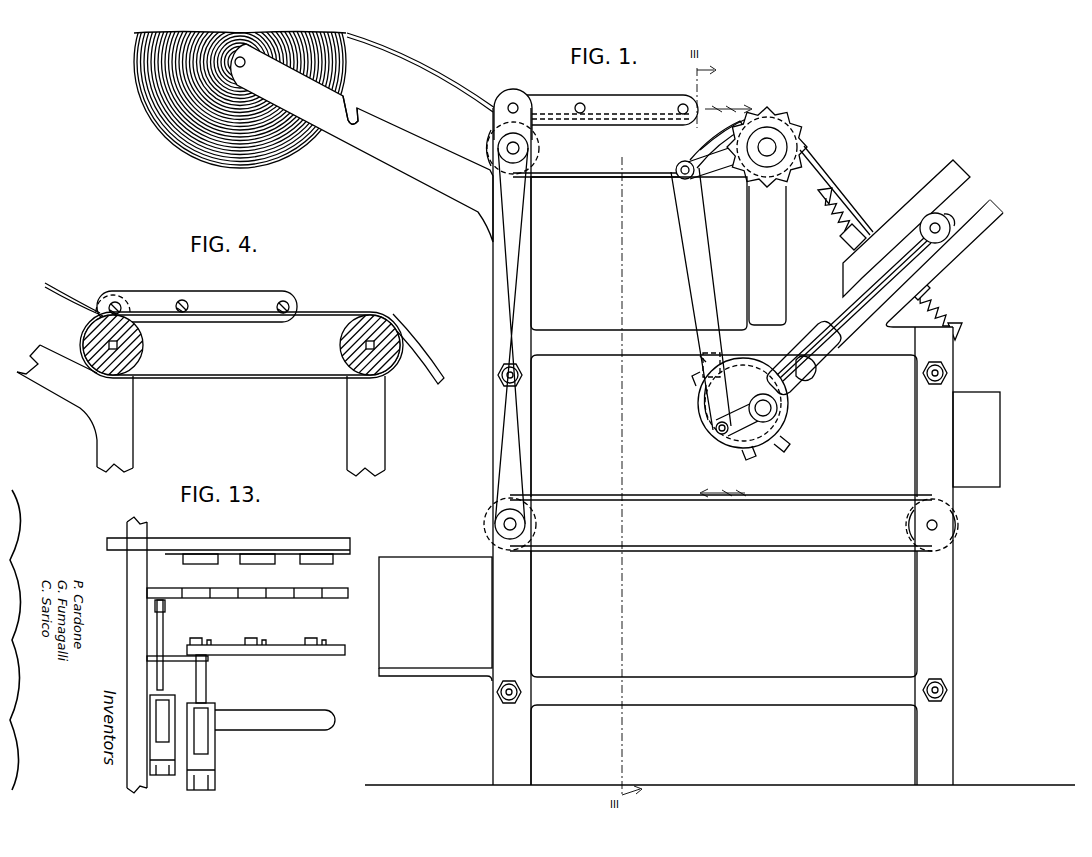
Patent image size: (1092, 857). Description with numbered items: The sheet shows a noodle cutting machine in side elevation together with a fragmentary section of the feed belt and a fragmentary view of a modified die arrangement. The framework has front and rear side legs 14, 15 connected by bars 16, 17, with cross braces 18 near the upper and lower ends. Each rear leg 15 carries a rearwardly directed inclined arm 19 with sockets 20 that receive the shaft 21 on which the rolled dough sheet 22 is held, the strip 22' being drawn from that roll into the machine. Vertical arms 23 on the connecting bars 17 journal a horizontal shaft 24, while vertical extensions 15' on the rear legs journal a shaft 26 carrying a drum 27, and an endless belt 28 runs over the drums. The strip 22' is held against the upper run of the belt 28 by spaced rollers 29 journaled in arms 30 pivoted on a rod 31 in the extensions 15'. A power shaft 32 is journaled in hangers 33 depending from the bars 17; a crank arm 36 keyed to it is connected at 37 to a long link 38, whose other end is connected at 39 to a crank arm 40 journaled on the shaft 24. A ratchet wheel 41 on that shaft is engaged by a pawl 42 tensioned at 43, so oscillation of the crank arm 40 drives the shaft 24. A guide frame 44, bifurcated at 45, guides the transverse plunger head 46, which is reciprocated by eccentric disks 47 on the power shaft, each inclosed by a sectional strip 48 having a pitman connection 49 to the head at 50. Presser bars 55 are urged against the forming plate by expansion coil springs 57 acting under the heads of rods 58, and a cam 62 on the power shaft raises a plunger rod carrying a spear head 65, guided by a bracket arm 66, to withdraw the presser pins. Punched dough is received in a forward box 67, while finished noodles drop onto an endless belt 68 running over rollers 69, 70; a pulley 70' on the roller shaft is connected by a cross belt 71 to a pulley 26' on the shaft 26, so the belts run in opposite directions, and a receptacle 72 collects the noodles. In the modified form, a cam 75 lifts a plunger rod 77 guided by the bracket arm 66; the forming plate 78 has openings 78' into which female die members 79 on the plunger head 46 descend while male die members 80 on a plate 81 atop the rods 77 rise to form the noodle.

In FIG. 1, the front side leg 14 is at (742, 556).
In FIG. 1, the rear side leg 15 is at (512, 446).
In FIG. 1, the vertical extension 15' is at (509, 101).
In FIG. 4, the vertical extension 15' is at (113, 286).
In FIG. 1, the connecting bar 16 is at (720, 734).
In FIG. 1, the connecting bar 17 is at (724, 337).
In FIG. 1, the cross brace 18 is at (948, 373).
In FIG. 1, the upwardly inclined arm 19 is at (362, 143).
In FIG. 4, the upwardly inclined arm 19 is at (75, 408).
In FIG. 1, the socket 20 is at (355, 108).
In FIG. 1, the shaft 21 is at (246, 62).
In FIG. 1, the dough roll 22 is at (217, 84).
In FIG. 1, the dough strip 22' is at (421, 72).
In FIG. 4, the dough strip 22' is at (72, 285).
In FIG. 1, the vertical arm 23 is at (767, 255).
In FIG. 4, the vertical arm 23 is at (366, 426).
In FIG. 1, the horizontal shaft 24 is at (776, 146).
In FIG. 4, the horizontal shaft 24 is at (348, 345).
In FIG. 1, the horizontal shaft 26 is at (536, 148).
In FIG. 4, the horizontal shaft 26 is at (129, 345).
In FIG. 1, the pulley 26' is at (471, 143).
In FIG. 1, the drum 27 is at (540, 142).
In FIG. 4, the drum 27 is at (140, 340).
In FIG. 1, the endless belt 28 is at (592, 178).
In FIG. 4, the endless belt 28 is at (246, 378).
In FIG. 1, the roller 29 is at (680, 106).
In FIG. 4, the roller 29 is at (278, 302).
In FIG. 1, the arm 30 is at (616, 112).
In FIG. 4, the arm 30 is at (160, 292).
In FIG. 1, the rod 31 is at (518, 104).
In FIG. 4, the rod 31 is at (115, 308).
In FIG. 1, the power shaft 32 is at (772, 408).
In FIG. 13, the power shaft 32 is at (300, 716).
In FIG. 1, the hanger 33 is at (782, 352).
In FIG. 1, the crank arm 36 is at (748, 442).
In FIG. 1, the connection 37 is at (716, 430).
In FIG. 1, the link 38 is at (690, 256).
In FIG. 1, the connection 39 is at (680, 176).
In FIG. 1, the crank arm 40 is at (699, 164).
In FIG. 1, the ratchet wheel 41 is at (760, 106).
In FIG. 1, the pawl 42 is at (700, 125).
In FIG. 1, the tension means 43 is at (692, 148).
In FIG. 1, the guide frame 44 is at (906, 228).
In FIG. 1, the bifurcated end 45 is at (988, 212).
In FIG. 1, the plunger head 46 is at (932, 216).
In FIG. 13, the plunger head 46 is at (300, 546).
In FIG. 1, the eccentric disk 47 is at (738, 388).
In FIG. 1, the sectional strip 48 is at (732, 368).
In FIG. 1, the pitman connection 49 is at (850, 312).
In FIG. 1, the connection 50 is at (940, 236).
In FIG. 1, the presser bar 55 is at (850, 246).
In FIG. 1, the expansion coil spring 57 is at (836, 224).
In FIG. 1, the rod 58 is at (820, 196).
In FIG. 13, the cam 62 is at (164, 710).
In FIG. 13, the spear head 65 is at (166, 606).
In FIG. 13, the bracket arm 66 is at (210, 660).
In FIG. 1, the box 67 is at (976, 439).
In FIG. 1, the endless belt 68 is at (721, 523).
In FIG. 1, the roller 69 is at (912, 525).
In FIG. 1, the roller 70 is at (532, 524).
In FIG. 1, the pulley 70' is at (488, 524).
In FIG. 1, the cross belt 71 is at (505, 430).
In FIG. 1, the receptacle 72 is at (435, 619).
In FIG. 13, the cam 75 is at (206, 718).
In FIG. 13, the plunger rod 77 is at (208, 690).
In FIG. 13, the forming plate 78 is at (247, 583).
In FIG. 13, the opening 78' is at (178, 579).
In FIG. 13, the female die member 79 is at (316, 564).
In FIG. 13, the male die member 80 is at (252, 644).
In FIG. 13, the plate 81 is at (300, 656).